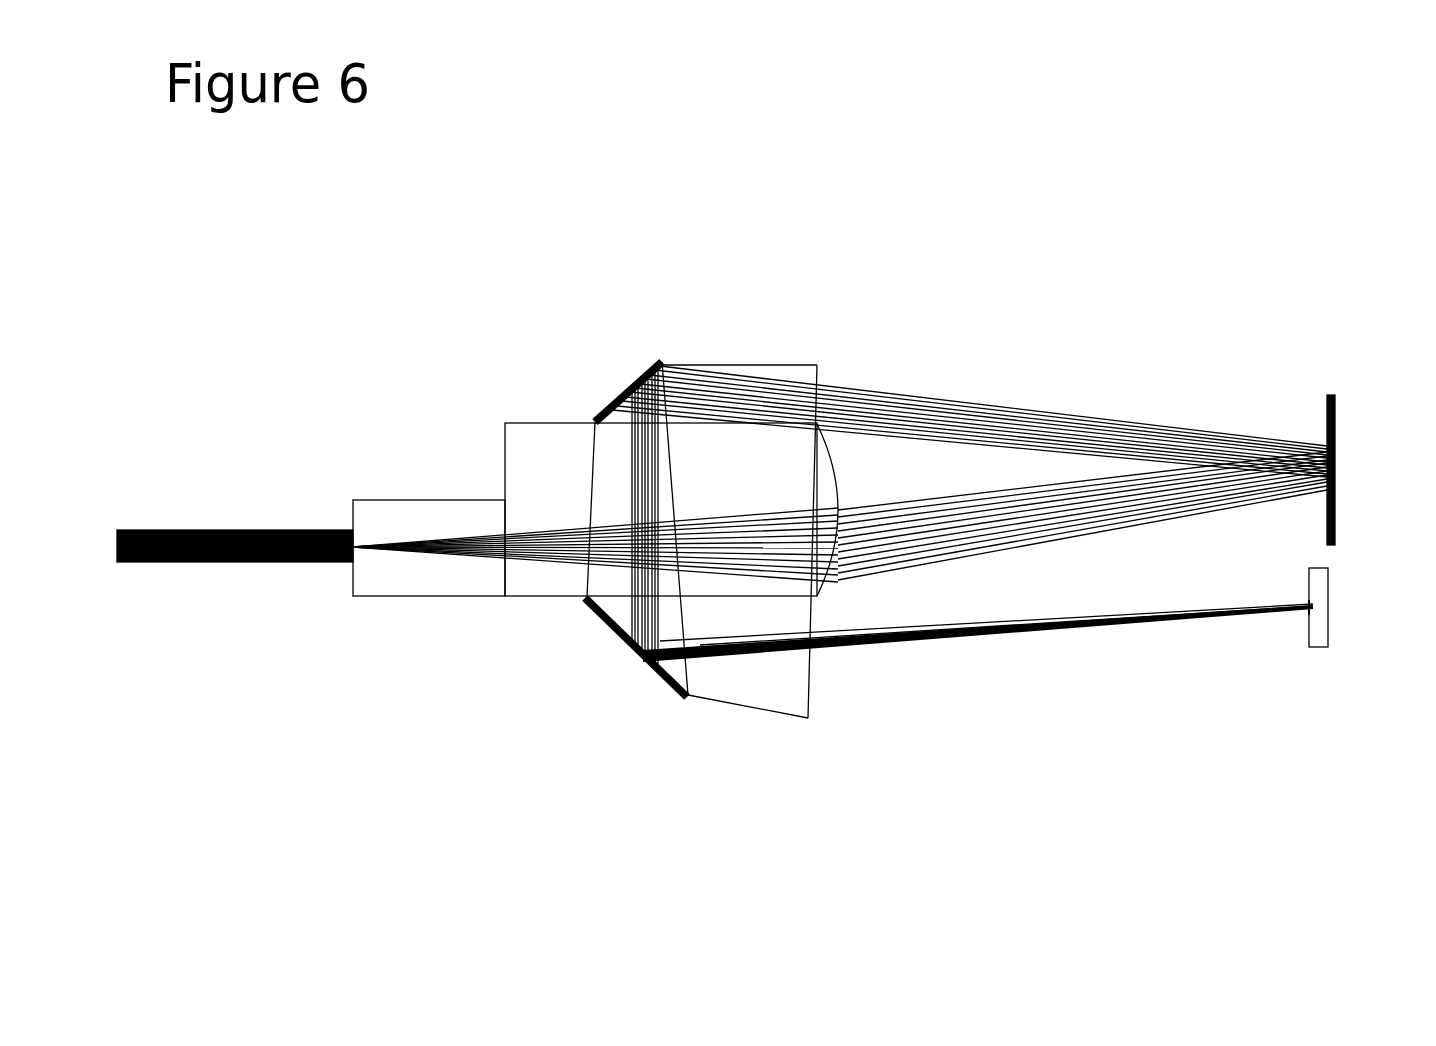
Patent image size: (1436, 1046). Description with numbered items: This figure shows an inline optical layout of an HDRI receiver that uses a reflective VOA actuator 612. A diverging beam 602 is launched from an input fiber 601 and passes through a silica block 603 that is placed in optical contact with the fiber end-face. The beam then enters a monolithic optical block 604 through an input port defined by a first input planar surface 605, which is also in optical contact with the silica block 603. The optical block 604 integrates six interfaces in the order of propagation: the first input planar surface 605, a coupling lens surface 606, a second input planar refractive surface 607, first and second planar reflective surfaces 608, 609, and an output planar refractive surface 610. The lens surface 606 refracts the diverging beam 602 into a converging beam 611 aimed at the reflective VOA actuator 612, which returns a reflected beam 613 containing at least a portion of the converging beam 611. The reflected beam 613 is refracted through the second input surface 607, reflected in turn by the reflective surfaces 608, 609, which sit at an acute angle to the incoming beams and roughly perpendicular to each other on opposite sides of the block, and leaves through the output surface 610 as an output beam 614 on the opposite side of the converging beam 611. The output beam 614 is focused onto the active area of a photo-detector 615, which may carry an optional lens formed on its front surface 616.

The input fiber 601 is at (235, 580).
The diverging beam 602 is at (404, 572).
The silica block 603 is at (425, 503).
The monolithic optical block 604 is at (710, 334).
The first input planar surface 605 is at (487, 598).
The coupling lens surface 606 is at (849, 609).
The second input planar refractive surface 607 is at (842, 358).
The first planar reflective surface 608 is at (622, 390).
The second planar reflective surface 609 is at (598, 622).
The output planar refractive surface 610 is at (737, 554).
The converging beam 611 is at (1082, 526).
The reflective VOA actuator 612 is at (1364, 470).
The reflected beam 613 is at (969, 414).
The output beam 614 is at (1048, 655).
The photo-detector 615 is at (1355, 607).
The front surface 616 is at (1289, 644).